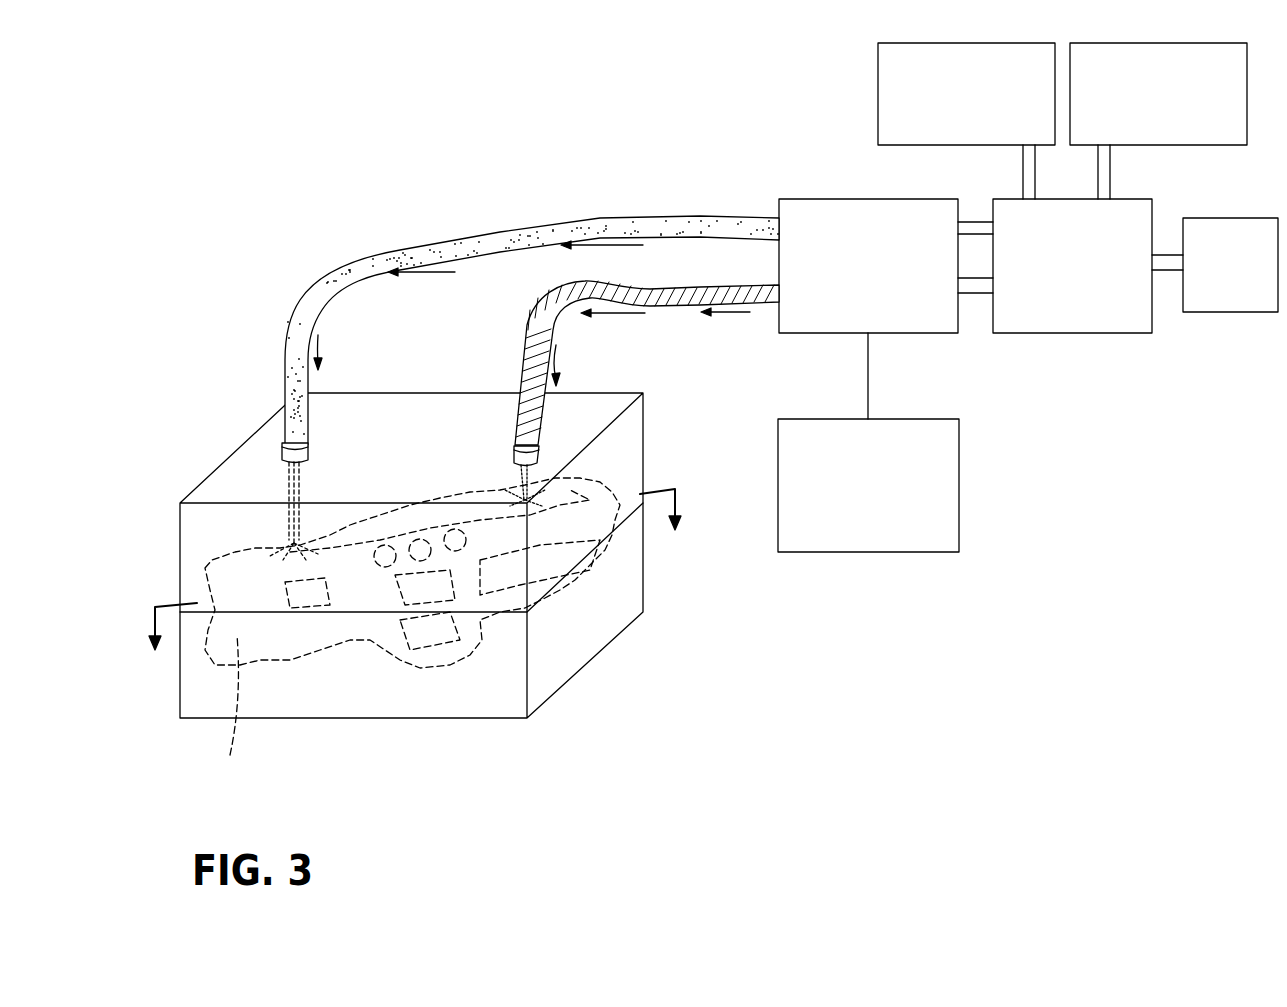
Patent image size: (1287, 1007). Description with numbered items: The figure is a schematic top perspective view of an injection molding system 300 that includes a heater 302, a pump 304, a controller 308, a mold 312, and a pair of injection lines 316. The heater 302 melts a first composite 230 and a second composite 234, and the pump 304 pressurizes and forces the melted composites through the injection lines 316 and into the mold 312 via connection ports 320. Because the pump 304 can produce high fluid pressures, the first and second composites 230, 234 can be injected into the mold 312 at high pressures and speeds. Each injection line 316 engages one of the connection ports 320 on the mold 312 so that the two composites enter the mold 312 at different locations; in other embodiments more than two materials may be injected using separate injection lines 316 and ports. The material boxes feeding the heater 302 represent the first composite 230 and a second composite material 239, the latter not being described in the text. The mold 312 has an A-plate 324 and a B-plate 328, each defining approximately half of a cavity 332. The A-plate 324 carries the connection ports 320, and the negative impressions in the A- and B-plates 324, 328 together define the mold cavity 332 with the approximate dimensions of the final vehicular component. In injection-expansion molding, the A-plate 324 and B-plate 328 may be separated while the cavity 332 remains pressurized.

The injection molding system 300 is at (266, 166).
The first composite 230 is at (953, 134).
The second composite material 239 is at (1145, 134).
The second composite 234 is at (660, 290).
The pump 304 is at (855, 280).
The heater 302 is at (1059, 280).
The controller 308 is at (855, 500).
The injection lines 316 is at (532, 303).
The connection ports 320 is at (283, 457).
The mold 312 is at (651, 577).
The A-plate 324 is at (190, 535).
The B-plate 328 is at (200, 665).
The cavity 332 is at (223, 708).